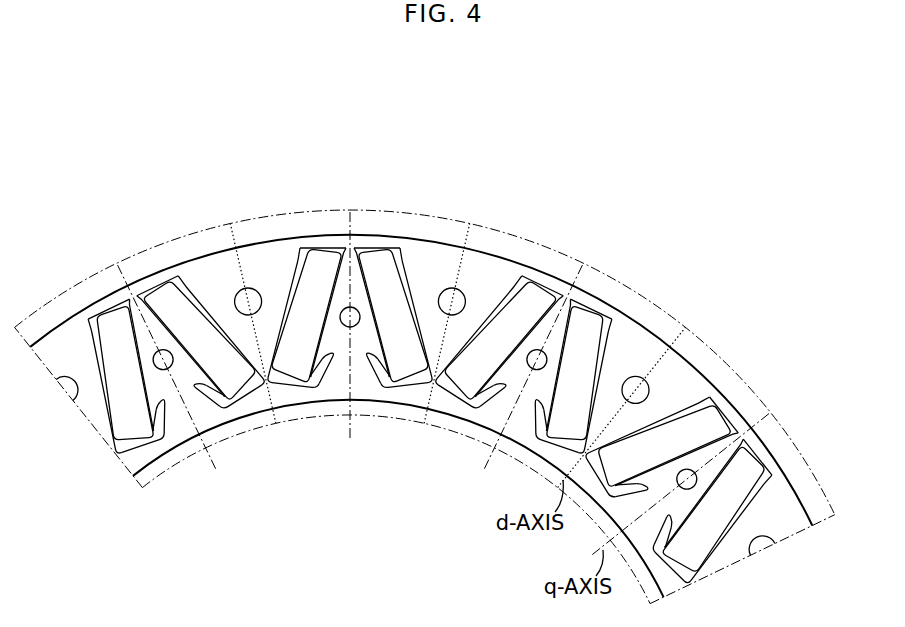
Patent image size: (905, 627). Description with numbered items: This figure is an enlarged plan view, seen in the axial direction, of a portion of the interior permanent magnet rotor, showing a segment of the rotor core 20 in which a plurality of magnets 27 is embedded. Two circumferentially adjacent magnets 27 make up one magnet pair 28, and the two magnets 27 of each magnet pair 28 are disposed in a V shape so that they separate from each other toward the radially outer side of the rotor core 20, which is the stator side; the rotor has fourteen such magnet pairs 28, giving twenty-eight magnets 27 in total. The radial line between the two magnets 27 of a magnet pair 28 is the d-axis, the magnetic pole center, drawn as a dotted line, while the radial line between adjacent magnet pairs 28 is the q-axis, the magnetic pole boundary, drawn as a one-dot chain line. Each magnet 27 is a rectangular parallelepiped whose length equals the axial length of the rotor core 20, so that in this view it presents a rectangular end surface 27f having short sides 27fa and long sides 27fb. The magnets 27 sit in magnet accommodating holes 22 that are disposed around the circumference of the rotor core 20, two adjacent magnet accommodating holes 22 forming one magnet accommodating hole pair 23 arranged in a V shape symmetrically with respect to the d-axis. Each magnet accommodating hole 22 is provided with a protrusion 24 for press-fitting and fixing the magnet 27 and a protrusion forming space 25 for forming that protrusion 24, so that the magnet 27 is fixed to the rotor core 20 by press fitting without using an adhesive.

The rotor core 20 is at (806, 495).
The magnet accommodating hole 22 is at (257, 395).
The magnet accommodating hole pair 23 is at (402, 483).
The protrusion 24 is at (218, 393).
The protrusion forming space 25 is at (193, 385).
The magnet 27 is at (200, 330).
The end surface 27f is at (383, 270).
The short side 27fa is at (348, 242).
The long side 27fb is at (412, 365).
The magnet pair 28 is at (426, 336).